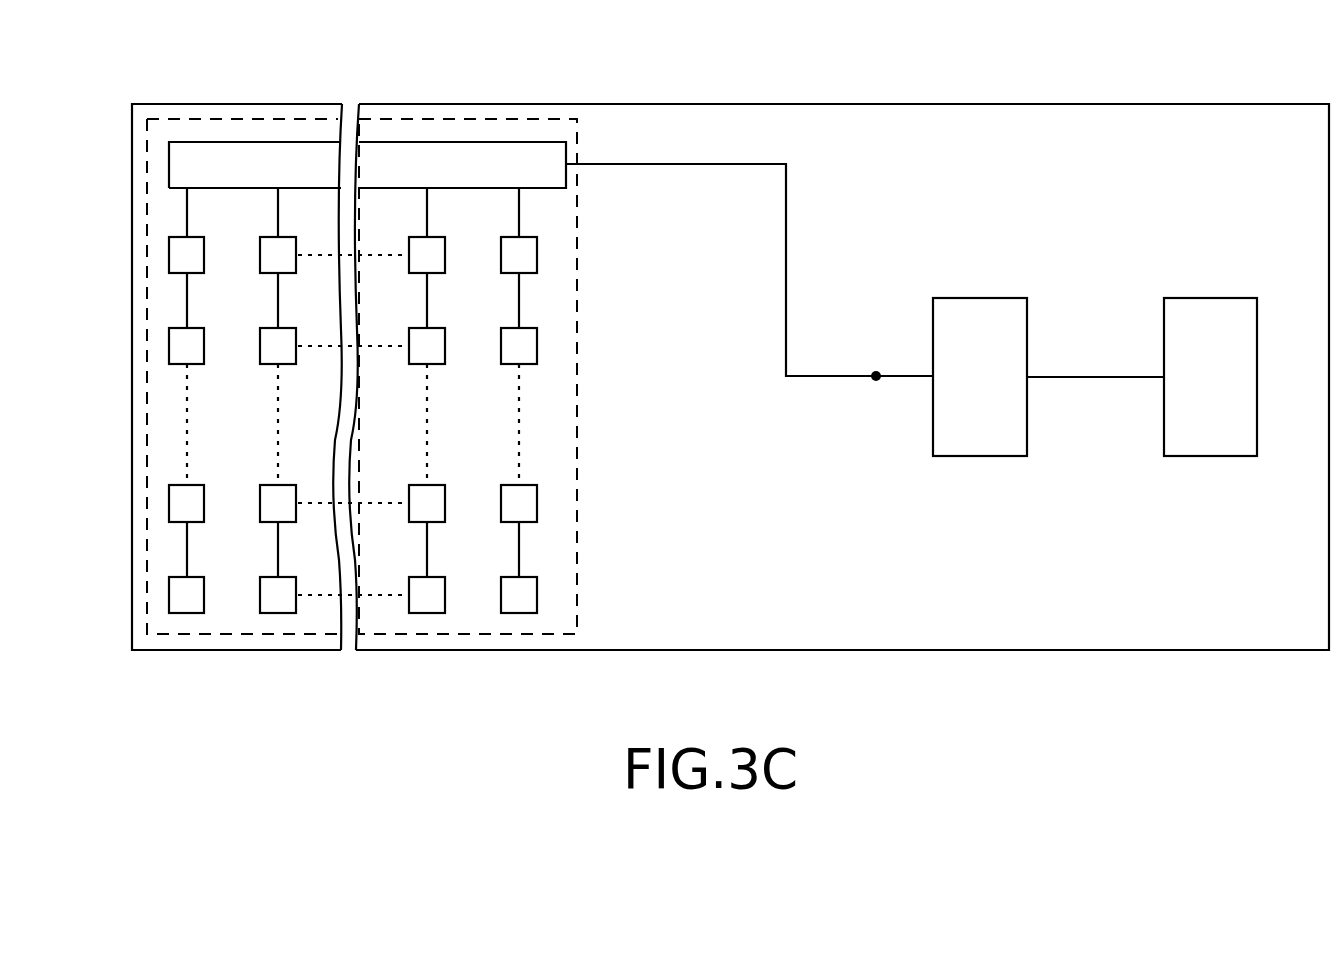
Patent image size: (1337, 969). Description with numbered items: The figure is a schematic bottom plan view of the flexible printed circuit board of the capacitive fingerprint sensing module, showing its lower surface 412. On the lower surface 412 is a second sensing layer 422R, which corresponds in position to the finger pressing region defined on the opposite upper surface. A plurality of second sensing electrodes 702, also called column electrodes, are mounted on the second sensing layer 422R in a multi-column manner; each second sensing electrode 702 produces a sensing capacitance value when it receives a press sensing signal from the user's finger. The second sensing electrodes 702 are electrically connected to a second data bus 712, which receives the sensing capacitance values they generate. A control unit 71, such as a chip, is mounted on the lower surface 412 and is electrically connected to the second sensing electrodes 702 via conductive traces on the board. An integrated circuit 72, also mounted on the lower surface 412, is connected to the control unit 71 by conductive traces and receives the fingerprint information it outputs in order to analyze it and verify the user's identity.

The lower surface 412 is at (1138, 127).
The second sensing layer 422R is at (532, 118).
The second data bus 712 is at (235, 155).
The second sensing electrode 702 is at (277, 612).
The control unit 71 is at (978, 315).
The integrated circuit 72 is at (1209, 315).